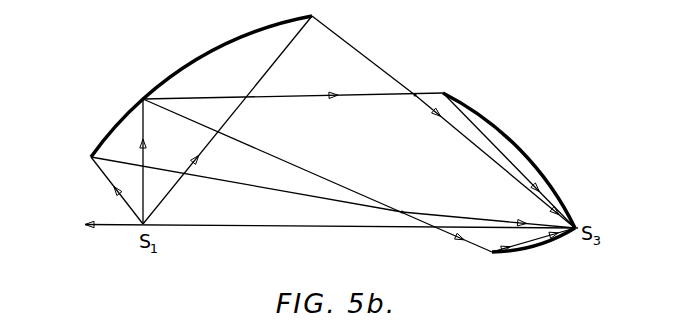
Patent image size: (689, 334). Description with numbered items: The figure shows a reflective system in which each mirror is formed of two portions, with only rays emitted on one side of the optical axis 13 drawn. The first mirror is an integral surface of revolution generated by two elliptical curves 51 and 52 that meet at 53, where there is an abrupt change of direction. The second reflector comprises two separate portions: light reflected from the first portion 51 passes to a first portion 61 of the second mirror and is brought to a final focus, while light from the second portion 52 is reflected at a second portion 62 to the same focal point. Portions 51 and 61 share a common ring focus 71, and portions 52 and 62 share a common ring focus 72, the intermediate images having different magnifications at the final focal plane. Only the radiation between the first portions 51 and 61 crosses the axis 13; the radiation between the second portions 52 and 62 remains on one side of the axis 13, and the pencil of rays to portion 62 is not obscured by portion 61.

The optical axis 13 is at (257, 228).
The first portion of the first mirror 51 is at (110, 128).
The second portion of the first mirror 52 is at (222, 47).
The meeting point of the elliptical curves 53 is at (143, 99).
The first portion of the second mirror 61 is at (530, 251).
The second portion of the second mirror 62 is at (512, 140).
The common ring focus of portions 51 and 61 71 is at (407, 212).
The common ring focus of portions 52 and 62 72 is at (415, 96).